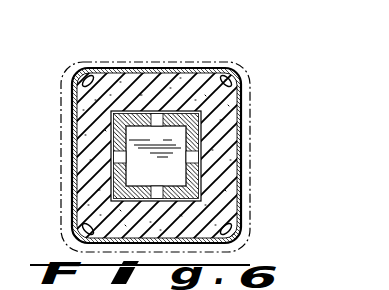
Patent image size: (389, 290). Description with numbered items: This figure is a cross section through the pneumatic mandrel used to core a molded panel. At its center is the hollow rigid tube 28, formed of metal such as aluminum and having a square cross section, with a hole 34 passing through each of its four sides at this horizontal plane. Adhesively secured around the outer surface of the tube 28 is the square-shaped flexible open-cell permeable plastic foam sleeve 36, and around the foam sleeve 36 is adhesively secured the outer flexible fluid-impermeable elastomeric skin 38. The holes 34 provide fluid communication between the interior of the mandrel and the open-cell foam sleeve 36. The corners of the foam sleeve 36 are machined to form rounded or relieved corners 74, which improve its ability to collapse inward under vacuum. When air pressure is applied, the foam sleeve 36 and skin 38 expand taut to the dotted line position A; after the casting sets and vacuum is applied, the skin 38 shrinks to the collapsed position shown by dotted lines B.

The relieved corners 74 is at (64, 93).
The outer flexible fluid impermeable elastomeric skin 38 is at (99, 69).
The flexible open-cell permeable plastic foam sleeve 36 is at (192, 84).
The holes 34 is at (156, 113).
The rigid tube 28 is at (203, 128).
The dotted line position A is at (252, 88).
The dotted lines B is at (226, 112).